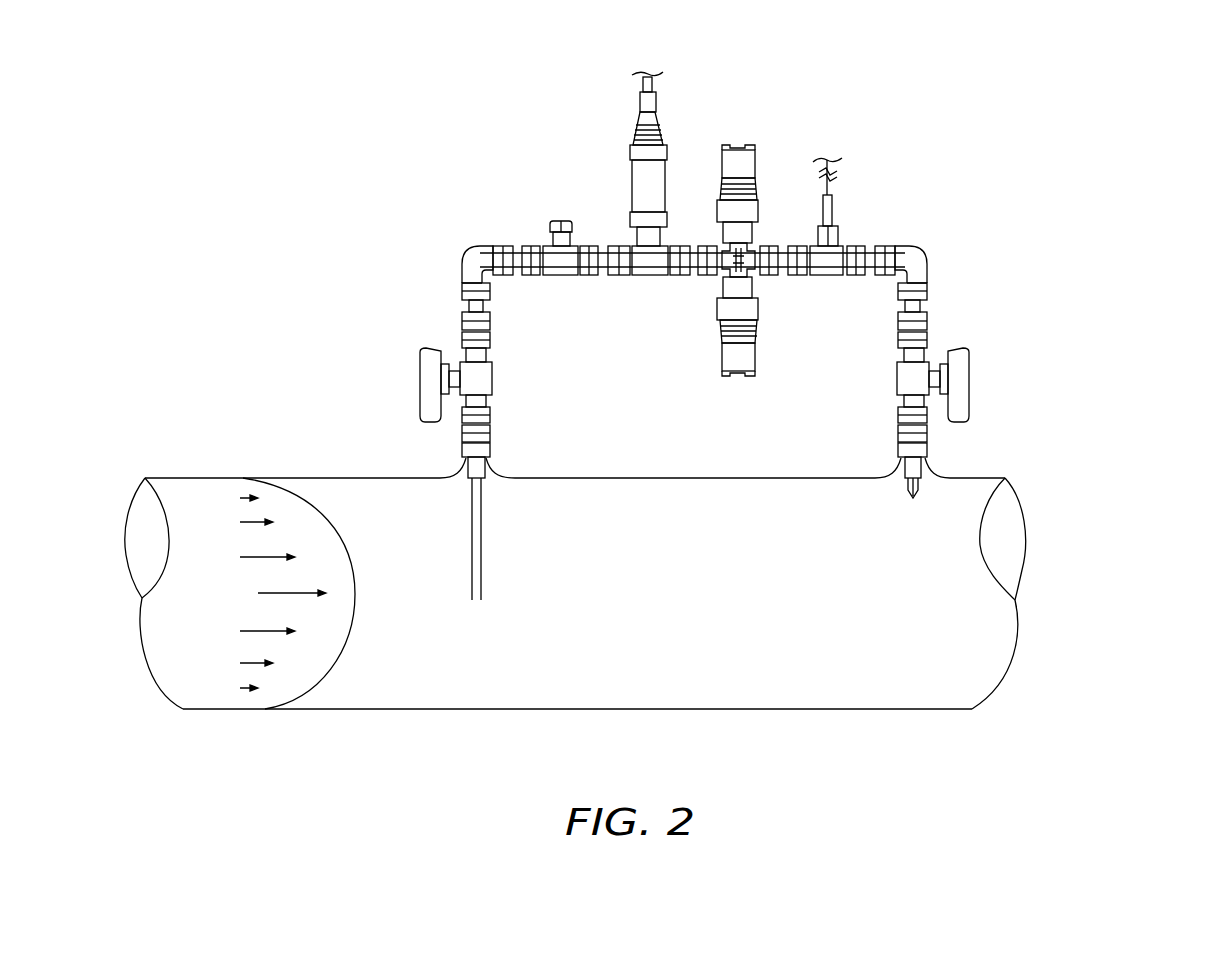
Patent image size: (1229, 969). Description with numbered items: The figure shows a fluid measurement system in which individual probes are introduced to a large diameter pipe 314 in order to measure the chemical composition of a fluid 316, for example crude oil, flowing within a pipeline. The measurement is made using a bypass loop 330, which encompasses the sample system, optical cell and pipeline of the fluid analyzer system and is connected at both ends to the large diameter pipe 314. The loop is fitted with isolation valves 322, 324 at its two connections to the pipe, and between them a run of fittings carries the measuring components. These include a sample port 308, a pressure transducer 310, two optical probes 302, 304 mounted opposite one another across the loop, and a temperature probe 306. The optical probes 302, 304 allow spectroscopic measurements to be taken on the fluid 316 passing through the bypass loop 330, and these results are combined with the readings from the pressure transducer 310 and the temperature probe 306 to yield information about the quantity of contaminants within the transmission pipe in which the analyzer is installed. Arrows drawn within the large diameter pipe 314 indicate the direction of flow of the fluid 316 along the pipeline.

The optical probe 302 is at (758, 155).
The optical probe 304 is at (790, 386).
The temperature probe 306 is at (893, 203).
The sample port 308 is at (548, 232).
The pressure transducer 310 is at (645, 118).
The large diameter pipe 314 is at (715, 449).
The fluid 316 is at (221, 652).
The isolation valve 322 is at (420, 364).
The isolation valve 324 is at (968, 378).
The bypass loop 330 is at (1088, 96).